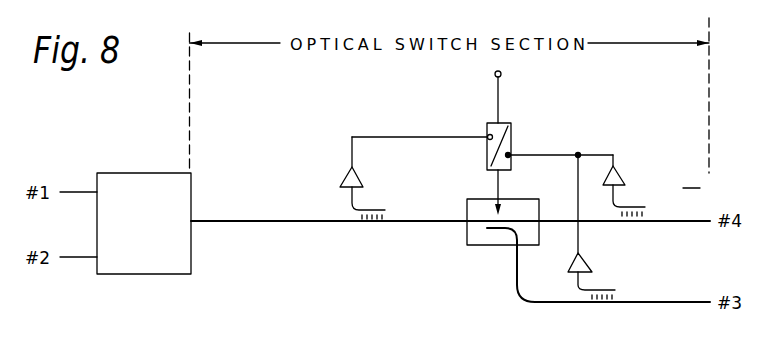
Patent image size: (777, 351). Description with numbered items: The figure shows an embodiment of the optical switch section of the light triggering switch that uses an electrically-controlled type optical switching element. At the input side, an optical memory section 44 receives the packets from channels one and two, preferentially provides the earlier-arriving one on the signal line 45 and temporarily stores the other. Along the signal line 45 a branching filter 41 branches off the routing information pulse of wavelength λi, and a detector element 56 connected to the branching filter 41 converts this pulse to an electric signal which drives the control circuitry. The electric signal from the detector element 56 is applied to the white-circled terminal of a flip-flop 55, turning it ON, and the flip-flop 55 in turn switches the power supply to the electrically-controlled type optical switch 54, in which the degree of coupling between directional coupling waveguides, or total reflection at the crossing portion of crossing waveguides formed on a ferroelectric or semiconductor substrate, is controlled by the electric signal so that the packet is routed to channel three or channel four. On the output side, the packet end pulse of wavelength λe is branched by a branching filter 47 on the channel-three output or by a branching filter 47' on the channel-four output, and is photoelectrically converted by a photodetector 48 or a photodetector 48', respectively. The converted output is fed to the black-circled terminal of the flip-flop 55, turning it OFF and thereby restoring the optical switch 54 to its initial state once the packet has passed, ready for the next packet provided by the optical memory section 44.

The optical memory section 44 is at (145, 172).
The signal line 45 is at (226, 223).
The branching filter 41 is at (370, 224).
The light source of wavelength λi 56 is at (358, 177).
The flip-flop 55 is at (514, 134).
The electrically-controlled type optical switch 54 is at (465, 203).
The photodetector 48' is at (631, 178).
The branching filter 47' is at (588, 226).
The photodetector 48 is at (570, 227).
The branching filter 47 is at (598, 287).